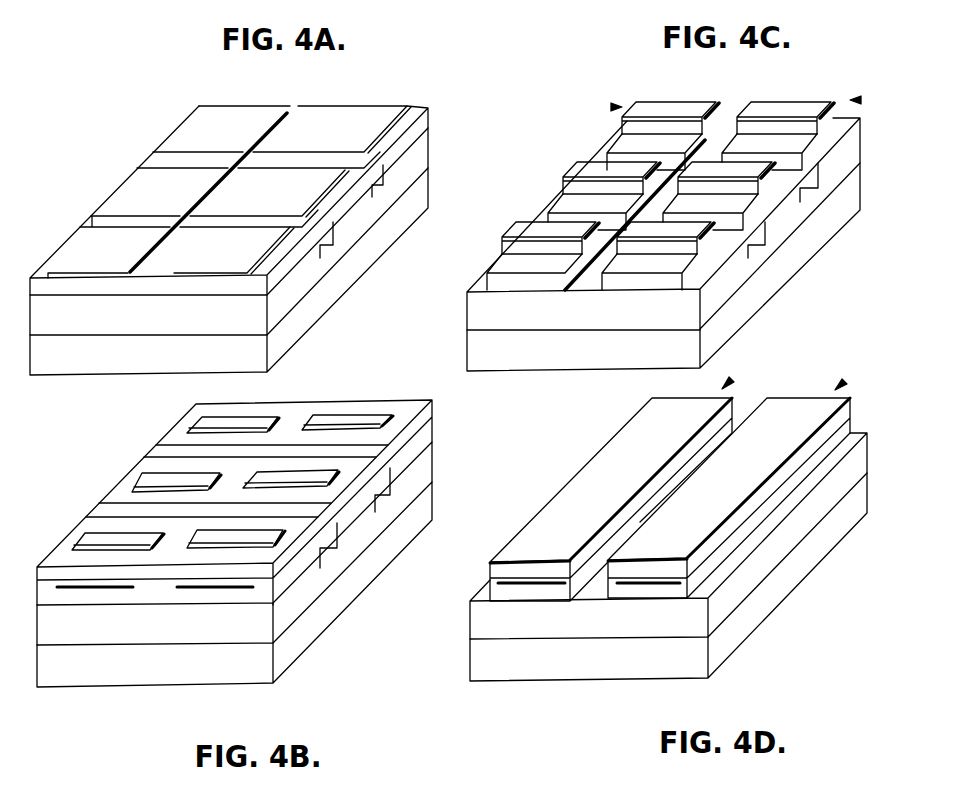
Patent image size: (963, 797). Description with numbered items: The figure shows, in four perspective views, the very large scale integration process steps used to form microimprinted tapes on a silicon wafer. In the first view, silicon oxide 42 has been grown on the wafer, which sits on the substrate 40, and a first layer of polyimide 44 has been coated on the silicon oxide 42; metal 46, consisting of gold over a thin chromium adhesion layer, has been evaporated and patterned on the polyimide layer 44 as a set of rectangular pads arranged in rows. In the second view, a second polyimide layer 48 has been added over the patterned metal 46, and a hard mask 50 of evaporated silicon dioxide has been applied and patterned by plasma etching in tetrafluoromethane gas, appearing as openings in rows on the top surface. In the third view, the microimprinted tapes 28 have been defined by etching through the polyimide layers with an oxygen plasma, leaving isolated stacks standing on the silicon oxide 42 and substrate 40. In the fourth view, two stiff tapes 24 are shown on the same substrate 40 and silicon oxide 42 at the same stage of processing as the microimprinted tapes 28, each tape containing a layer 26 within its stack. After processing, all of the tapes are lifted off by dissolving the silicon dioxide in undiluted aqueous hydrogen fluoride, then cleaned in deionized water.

In FIG. 4D, the stiff tapes 24 is at (728, 384).
In FIG. 4D, the core layer 26 is at (507, 579).
In FIG. 4C, the microimprinted tapes 28 is at (613, 107).
In FIG. 4A, the substrate 40 is at (422, 197).
In FIG. 4B, the substrate 40 is at (234, 584).
In FIG. 4C, the substrate 40 is at (663, 267).
In FIG. 4D, the substrate 40 is at (668, 575).
In FIG. 4A, the silicon oxide 42 is at (423, 157).
In FIG. 4B, the silicon oxide 42 is at (234, 543).
In FIG. 4C, the silicon oxide 42 is at (663, 224).
In FIG. 4D, the silicon oxide 42 is at (668, 532).
In FIG. 4A, the first layer of polyimide 44 is at (423, 123).
In FIG. 4C, the first layer of polyimide 44 is at (498, 284).
In FIG. 4A, the metal 46 is at (98, 253).
In FIG. 4C, the metal 46 is at (488, 274).
In FIG. 4B, the second polyimide layer 48 is at (135, 475).
In FIG. 4C, the second polyimide layer 48 is at (512, 247).
In FIG. 4B, the hard mask 50 is at (203, 422).